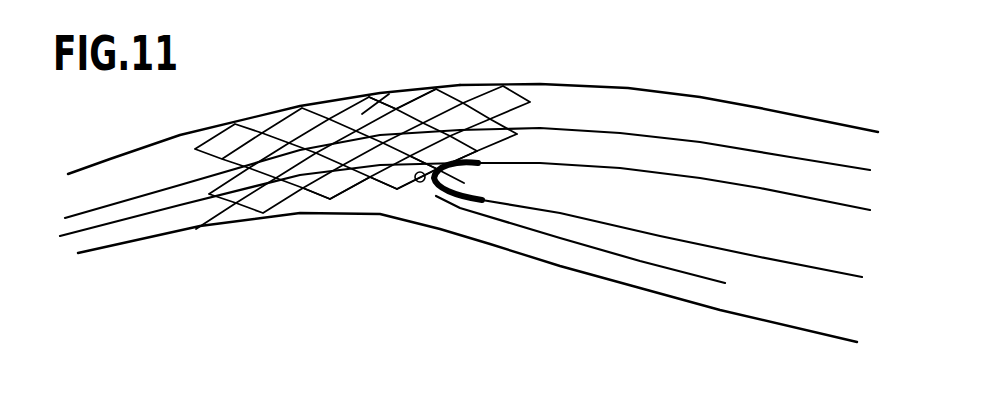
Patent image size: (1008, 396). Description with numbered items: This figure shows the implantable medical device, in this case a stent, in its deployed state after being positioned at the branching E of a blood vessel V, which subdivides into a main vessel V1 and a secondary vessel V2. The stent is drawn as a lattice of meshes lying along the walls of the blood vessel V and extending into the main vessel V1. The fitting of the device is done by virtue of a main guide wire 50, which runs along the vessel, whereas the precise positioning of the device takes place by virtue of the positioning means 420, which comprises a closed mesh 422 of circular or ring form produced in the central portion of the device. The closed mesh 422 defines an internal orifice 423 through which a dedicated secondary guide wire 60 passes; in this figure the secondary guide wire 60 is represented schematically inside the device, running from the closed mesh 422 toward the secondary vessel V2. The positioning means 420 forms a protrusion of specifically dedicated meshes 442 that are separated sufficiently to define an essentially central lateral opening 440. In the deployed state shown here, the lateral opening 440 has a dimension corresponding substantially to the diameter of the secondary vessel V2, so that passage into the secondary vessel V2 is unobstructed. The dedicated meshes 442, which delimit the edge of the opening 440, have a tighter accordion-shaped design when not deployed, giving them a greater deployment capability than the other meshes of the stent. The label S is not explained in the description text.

The blood vessel V is at (110, 158).
The main vessel V1 is at (628, 90).
The secondary vessel V2 is at (662, 300).
The main guide wire 50 is at (790, 157).
The secondary guide wire 60 is at (705, 283).
The positioning means 420 is at (418, 192).
The closed mesh 422 is at (437, 168).
The internal orifice 423 is at (393, 95).
The lateral opening 440 is at (392, 195).
The dedicated meshes 442 is at (372, 220).
The branching E is at (447, 173).
The side branch opening S is at (455, 198).